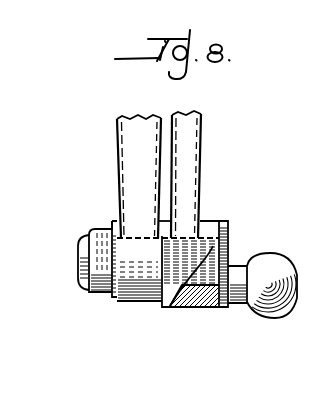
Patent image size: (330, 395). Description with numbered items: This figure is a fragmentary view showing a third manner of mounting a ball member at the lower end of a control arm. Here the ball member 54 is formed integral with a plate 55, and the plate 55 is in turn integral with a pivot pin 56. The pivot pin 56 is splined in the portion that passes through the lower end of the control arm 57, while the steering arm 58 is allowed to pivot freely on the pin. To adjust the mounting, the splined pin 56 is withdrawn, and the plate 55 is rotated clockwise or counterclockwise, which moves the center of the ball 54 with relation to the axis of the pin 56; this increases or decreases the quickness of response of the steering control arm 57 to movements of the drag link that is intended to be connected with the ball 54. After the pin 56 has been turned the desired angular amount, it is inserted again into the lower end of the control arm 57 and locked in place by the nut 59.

The ball member 54 is at (273, 263).
The plate 55 is at (226, 227).
The pivot pin 56 is at (83, 237).
The control arm 57 is at (193, 149).
The steering arm 58 is at (127, 136).
The nut 59 is at (103, 286).